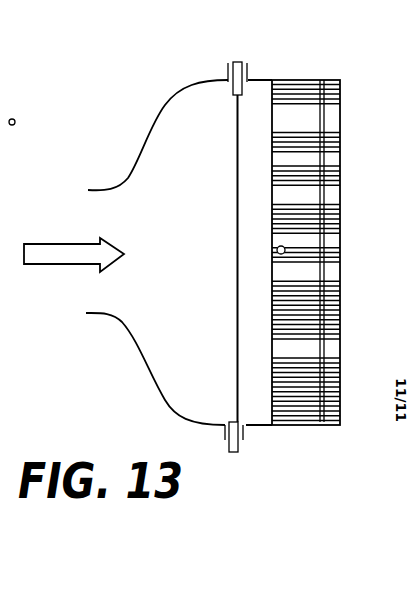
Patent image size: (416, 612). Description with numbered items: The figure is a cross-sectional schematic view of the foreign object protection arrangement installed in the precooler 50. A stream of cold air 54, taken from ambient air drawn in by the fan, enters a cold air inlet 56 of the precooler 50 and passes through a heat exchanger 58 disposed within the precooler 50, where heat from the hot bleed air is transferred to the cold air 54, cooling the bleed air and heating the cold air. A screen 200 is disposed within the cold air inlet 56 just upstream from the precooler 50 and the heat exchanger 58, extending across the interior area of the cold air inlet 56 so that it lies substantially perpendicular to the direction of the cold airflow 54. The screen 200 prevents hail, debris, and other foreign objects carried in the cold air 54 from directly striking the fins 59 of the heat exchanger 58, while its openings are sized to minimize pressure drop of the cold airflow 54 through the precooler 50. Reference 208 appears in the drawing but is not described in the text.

The precooler 50 is at (284, 432).
The cold air 54 is at (46, 264).
The cold air inlet 56 is at (170, 143).
The heat exchanger 58 is at (340, 165).
The fins 59 is at (303, 95).
The screen 200 is at (237, 216).
The opening 208 is at (16, 105).